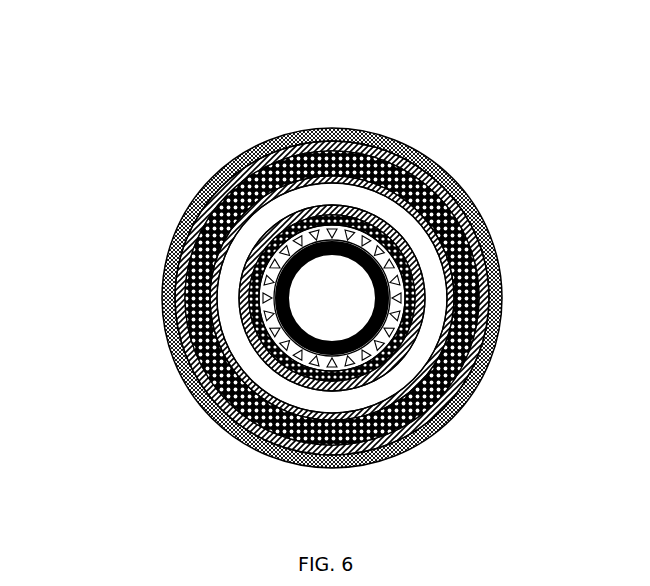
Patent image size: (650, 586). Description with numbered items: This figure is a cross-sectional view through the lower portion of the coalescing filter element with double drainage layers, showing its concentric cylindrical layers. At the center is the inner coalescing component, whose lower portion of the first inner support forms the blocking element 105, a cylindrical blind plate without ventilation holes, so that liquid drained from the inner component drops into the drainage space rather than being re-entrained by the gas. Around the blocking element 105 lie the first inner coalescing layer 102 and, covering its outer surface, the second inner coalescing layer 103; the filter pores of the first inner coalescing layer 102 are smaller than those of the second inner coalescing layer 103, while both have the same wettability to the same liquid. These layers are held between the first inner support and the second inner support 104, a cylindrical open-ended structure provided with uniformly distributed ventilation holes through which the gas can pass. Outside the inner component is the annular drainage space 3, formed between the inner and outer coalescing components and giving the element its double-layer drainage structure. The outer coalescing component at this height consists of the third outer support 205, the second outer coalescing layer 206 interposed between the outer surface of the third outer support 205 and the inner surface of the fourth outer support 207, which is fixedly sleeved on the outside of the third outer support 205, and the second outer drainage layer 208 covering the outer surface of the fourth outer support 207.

The annular drainage space 3 is at (315, 188).
The first inner coalescing layer 102 is at (380, 268).
The second inner coalescing layer 103 is at (380, 236).
The second inner support 104 is at (367, 217).
The blocking element 105 is at (385, 300).
The third outer support 205 is at (163, 246).
The second outer coalescing layer 206 is at (187, 193).
The fourth outer support 207 is at (218, 160).
The second outer drainage layer 208 is at (247, 140).